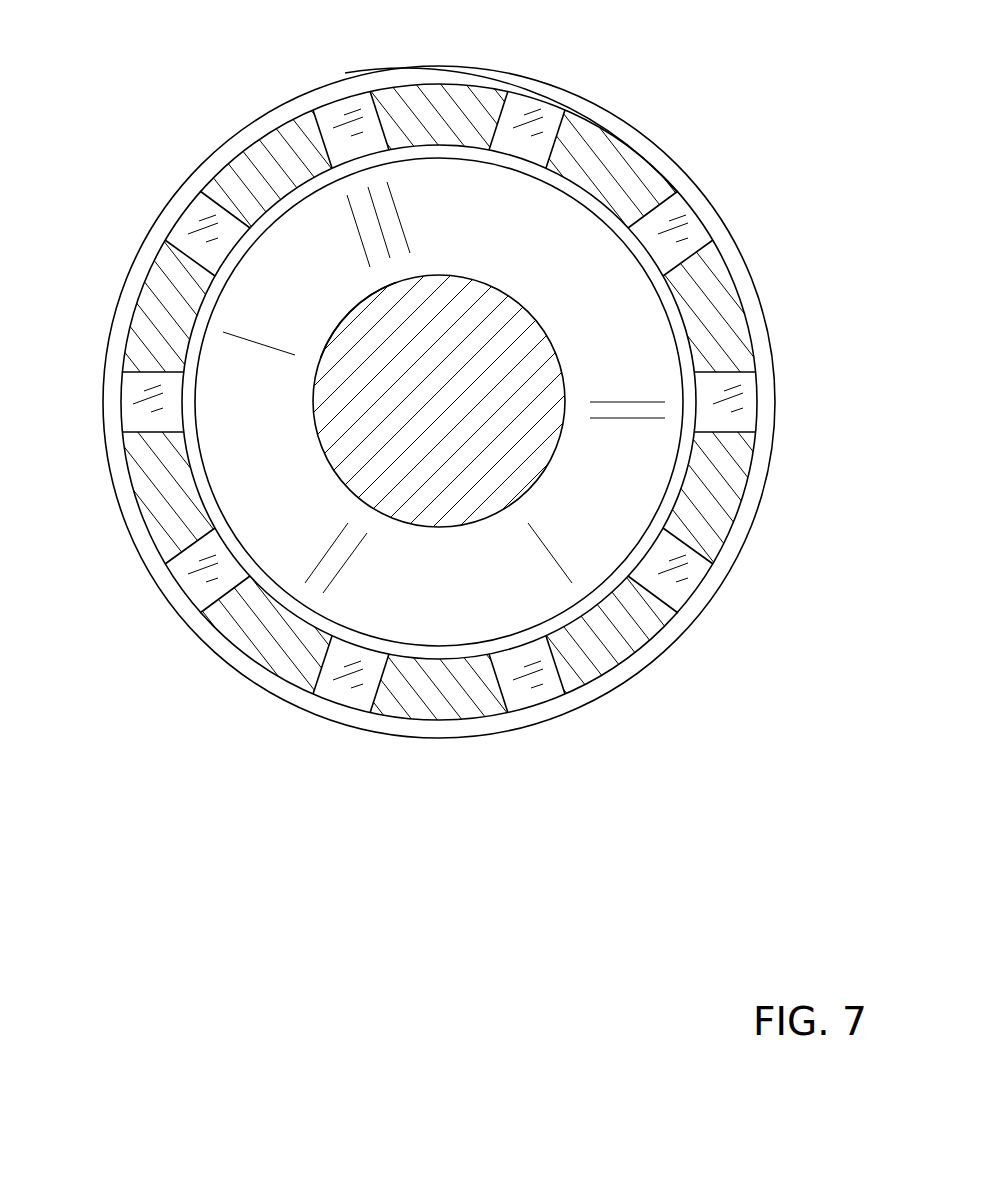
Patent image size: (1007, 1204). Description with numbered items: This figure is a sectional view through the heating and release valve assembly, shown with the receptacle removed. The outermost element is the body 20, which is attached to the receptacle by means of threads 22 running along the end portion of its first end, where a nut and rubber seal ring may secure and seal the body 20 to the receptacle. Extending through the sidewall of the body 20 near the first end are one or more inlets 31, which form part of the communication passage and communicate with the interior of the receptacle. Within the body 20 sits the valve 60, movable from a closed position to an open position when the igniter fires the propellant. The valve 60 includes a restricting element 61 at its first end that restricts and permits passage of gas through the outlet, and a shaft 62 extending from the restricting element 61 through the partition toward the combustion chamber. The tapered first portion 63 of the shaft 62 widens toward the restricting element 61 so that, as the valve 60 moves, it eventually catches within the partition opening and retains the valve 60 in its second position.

The body 20 is at (663, 664).
The threads 22 is at (618, 128).
The inlet 31 is at (185, 232).
The valve 60 is at (690, 319).
The restricting element 61 is at (238, 467).
The shaft 62 is at (568, 466).
The first portion 63 is at (363, 327).